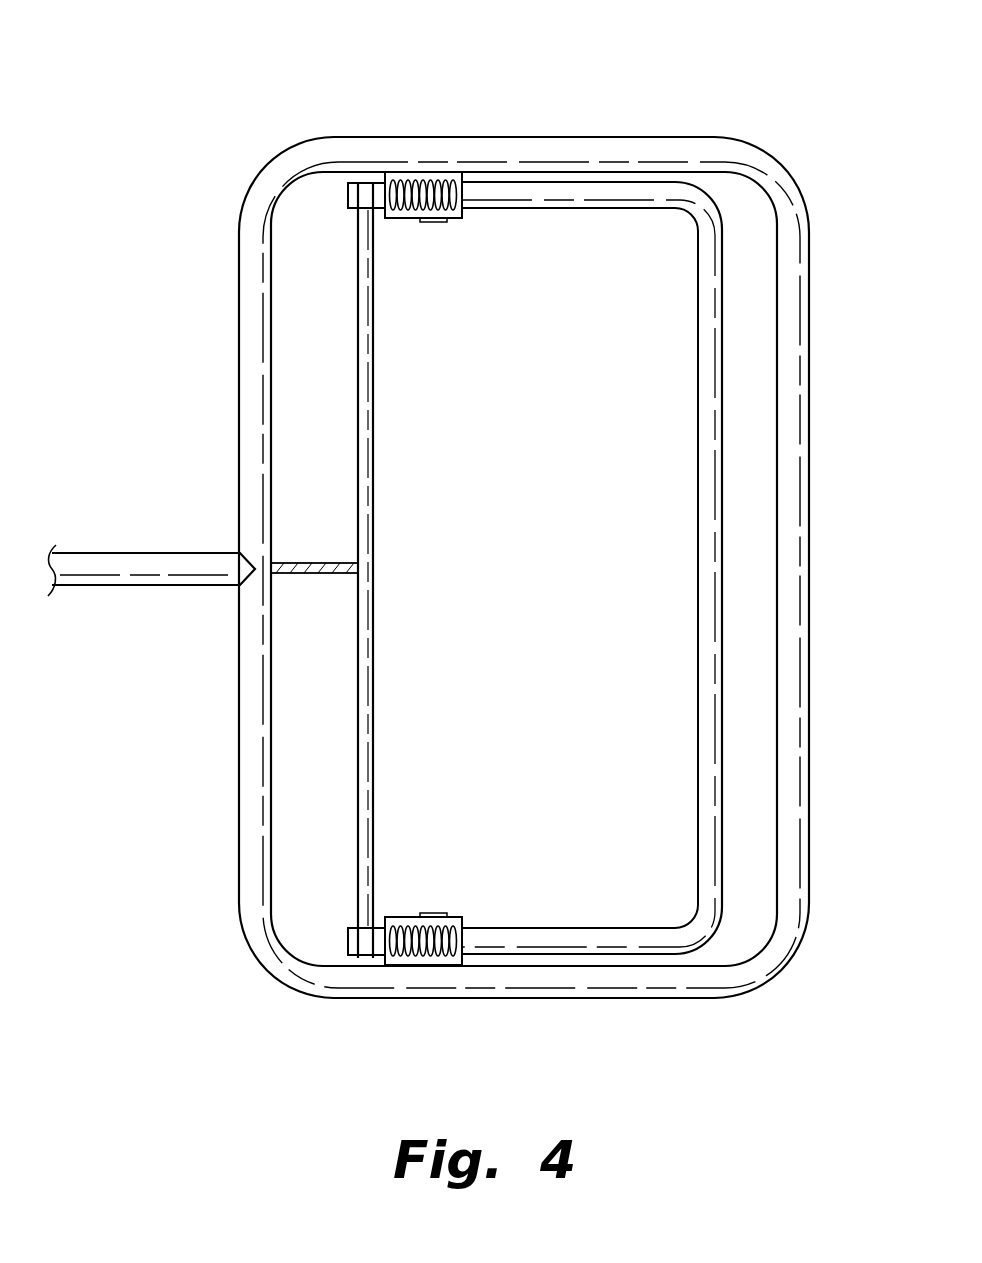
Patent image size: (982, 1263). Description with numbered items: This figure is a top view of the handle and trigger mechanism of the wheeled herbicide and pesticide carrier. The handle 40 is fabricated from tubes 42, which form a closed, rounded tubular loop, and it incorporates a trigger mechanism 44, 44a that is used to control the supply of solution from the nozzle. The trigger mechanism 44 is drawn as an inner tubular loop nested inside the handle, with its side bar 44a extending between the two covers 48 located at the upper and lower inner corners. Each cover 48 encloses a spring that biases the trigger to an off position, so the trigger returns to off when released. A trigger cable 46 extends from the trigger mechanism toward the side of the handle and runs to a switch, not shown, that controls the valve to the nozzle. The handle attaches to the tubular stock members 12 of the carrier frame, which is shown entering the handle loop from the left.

The handle 40 is at (118, 86).
The tubes 42 is at (810, 496).
The trigger mechanism 44 is at (697, 570).
The trigger mechanism 44a is at (374, 473).
The trigger cable 46 is at (321, 574).
The covers 48 is at (405, 222).
The tubular stock members 12 is at (125, 553).